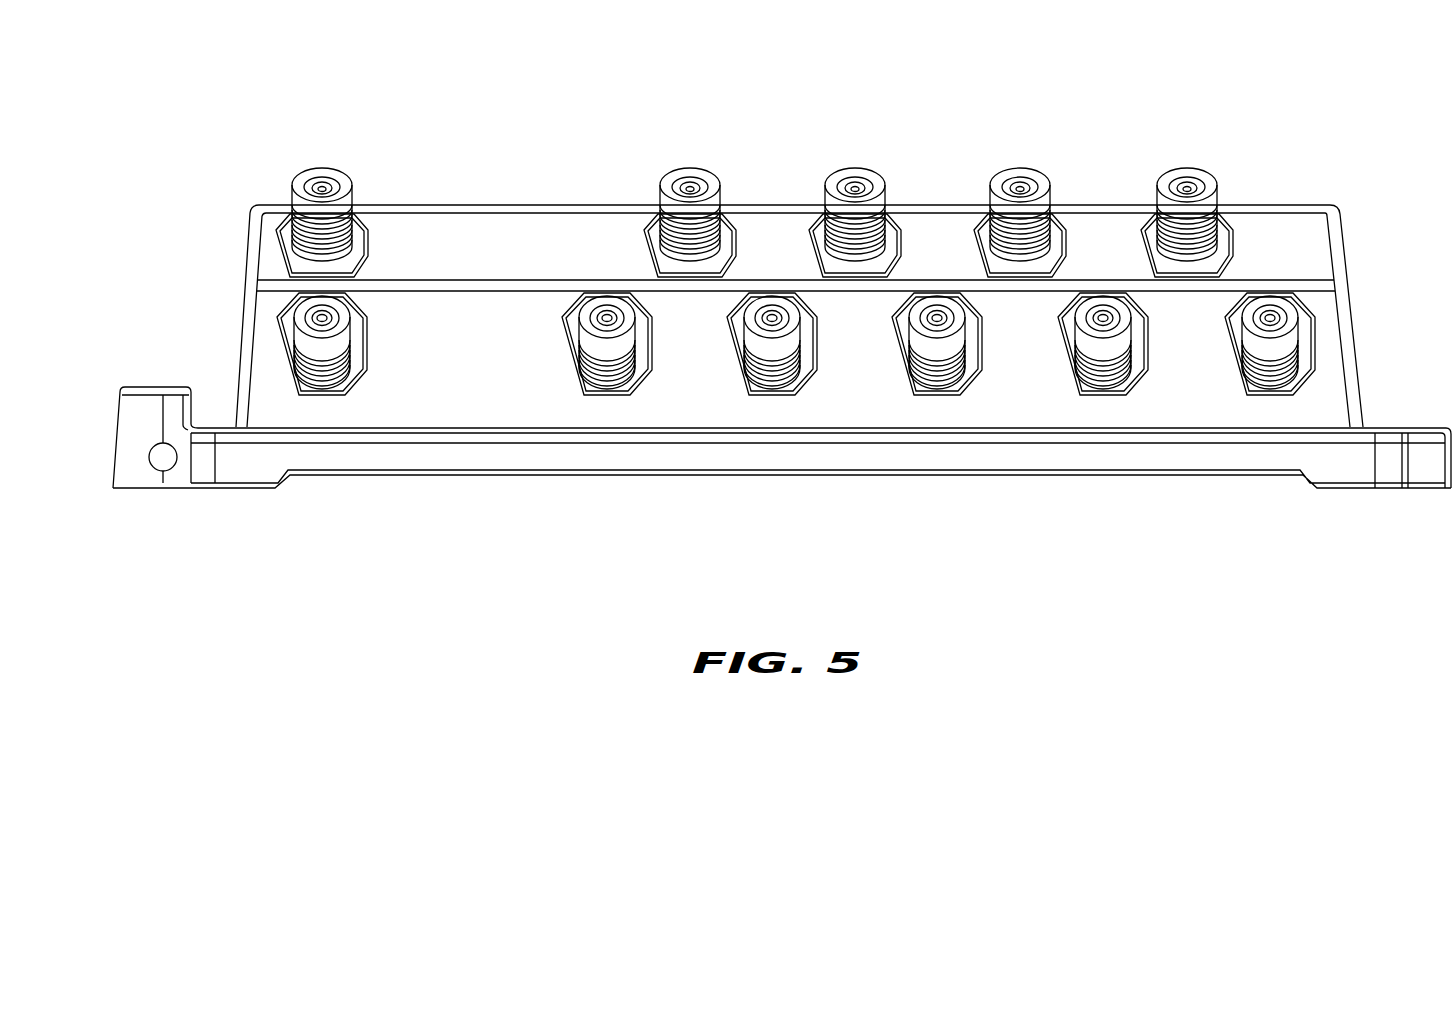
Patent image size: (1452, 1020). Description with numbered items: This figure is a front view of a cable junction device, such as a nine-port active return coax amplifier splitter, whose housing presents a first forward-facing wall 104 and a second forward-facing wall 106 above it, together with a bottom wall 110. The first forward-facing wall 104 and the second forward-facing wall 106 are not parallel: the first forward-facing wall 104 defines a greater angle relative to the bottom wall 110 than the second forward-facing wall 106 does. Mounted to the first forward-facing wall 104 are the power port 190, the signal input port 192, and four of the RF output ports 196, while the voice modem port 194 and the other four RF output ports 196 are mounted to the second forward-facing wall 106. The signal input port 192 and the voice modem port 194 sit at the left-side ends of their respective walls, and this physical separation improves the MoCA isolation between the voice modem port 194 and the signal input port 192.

The first forward-facing wall 104 is at (428, 388).
The second forward-facing wall 106 is at (527, 225).
The bottom wall 110 is at (1115, 499).
The power port 190 is at (1298, 300).
The signal input port 192 is at (325, 343).
The voice modem port 194 is at (322, 167).
The RF output ports 196 is at (690, 167).